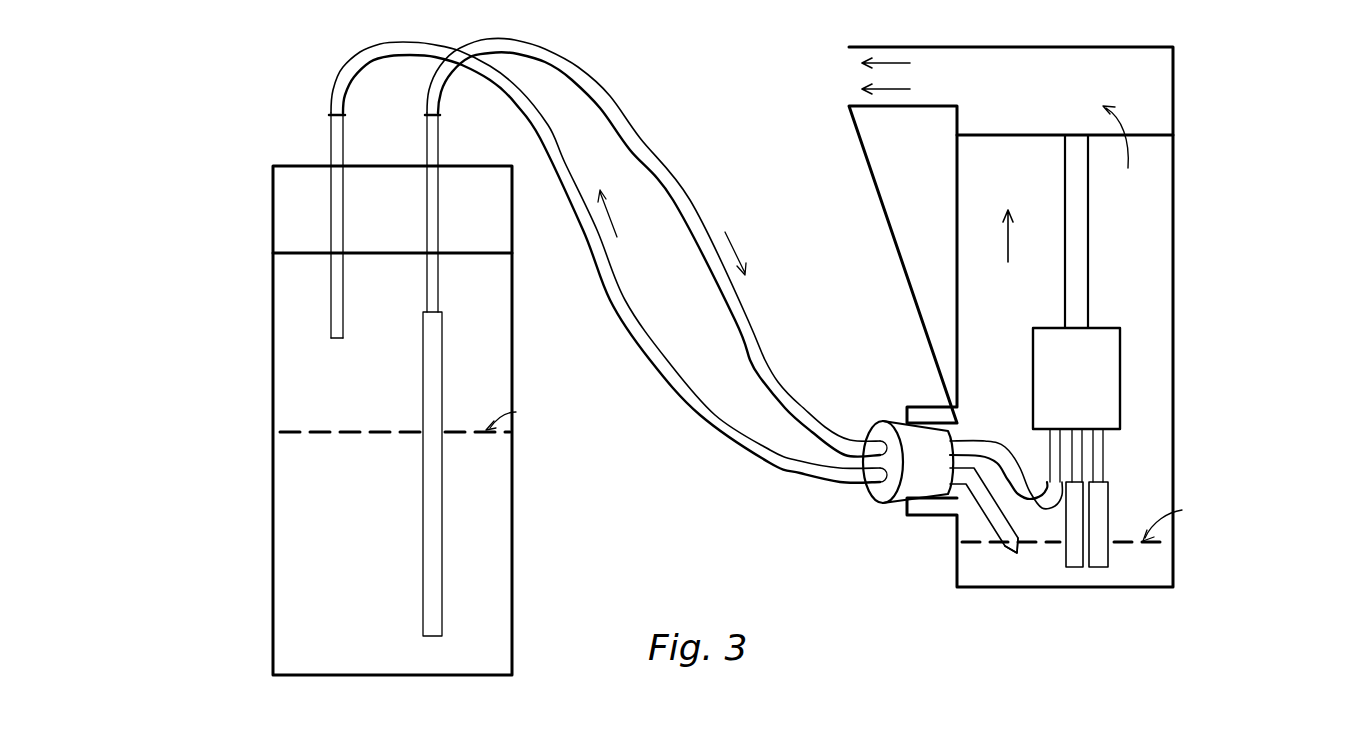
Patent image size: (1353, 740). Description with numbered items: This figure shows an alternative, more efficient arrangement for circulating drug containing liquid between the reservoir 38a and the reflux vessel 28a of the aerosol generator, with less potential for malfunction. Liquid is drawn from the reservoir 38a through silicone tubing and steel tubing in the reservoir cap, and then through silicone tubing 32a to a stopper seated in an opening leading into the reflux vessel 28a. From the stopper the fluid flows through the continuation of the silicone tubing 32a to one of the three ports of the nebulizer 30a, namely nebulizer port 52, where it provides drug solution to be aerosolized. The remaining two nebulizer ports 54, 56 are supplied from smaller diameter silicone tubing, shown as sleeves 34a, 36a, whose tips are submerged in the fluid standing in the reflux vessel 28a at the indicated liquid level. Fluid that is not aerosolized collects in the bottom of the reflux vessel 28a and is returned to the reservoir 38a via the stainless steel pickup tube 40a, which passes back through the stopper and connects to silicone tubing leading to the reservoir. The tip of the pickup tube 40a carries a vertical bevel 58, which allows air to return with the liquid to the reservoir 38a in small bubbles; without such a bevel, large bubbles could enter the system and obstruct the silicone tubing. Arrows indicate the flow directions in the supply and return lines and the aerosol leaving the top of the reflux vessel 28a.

The reflux vessel 28a is at (1174, 224).
The nebulizer 30a is at (1120, 335).
The silicone tubing 32a is at (743, 303).
The sleeve 34a is at (1080, 495).
The sleeve 36a is at (1100, 507).
The reservoir 38a is at (273, 542).
The stainless steel pickup tube 40a is at (631, 329).
The nebulizer port 52 is at (1053, 428).
The nebulizer port 54 is at (1078, 428).
The nebulizer port 56 is at (1099, 428).
The vertical bevel 58 is at (1018, 548).